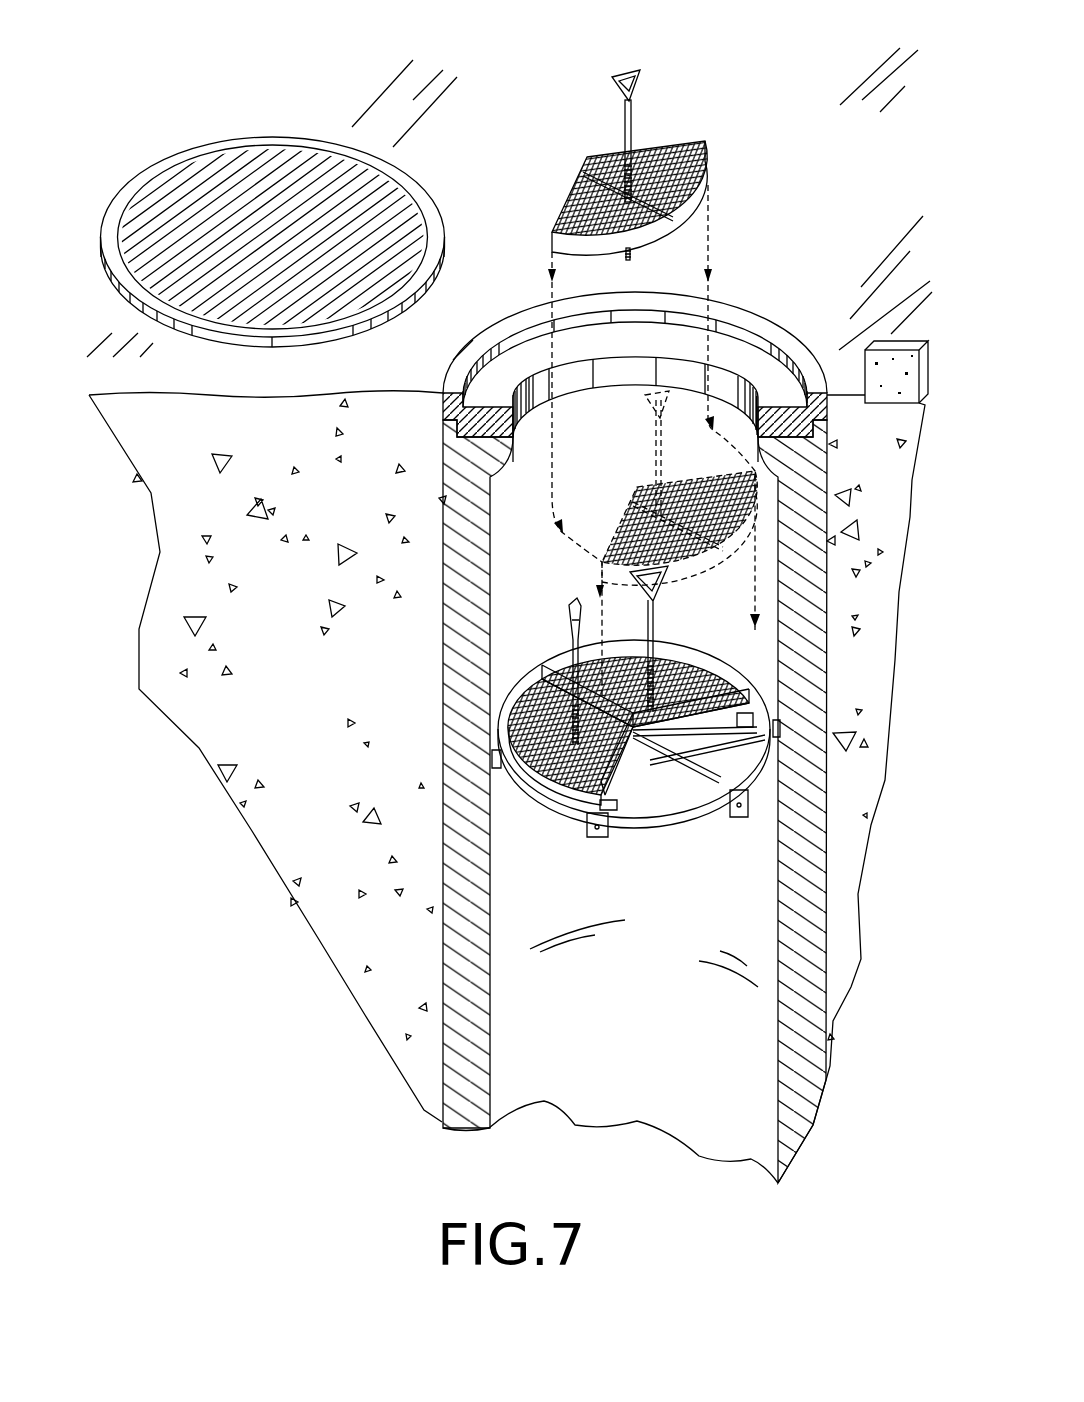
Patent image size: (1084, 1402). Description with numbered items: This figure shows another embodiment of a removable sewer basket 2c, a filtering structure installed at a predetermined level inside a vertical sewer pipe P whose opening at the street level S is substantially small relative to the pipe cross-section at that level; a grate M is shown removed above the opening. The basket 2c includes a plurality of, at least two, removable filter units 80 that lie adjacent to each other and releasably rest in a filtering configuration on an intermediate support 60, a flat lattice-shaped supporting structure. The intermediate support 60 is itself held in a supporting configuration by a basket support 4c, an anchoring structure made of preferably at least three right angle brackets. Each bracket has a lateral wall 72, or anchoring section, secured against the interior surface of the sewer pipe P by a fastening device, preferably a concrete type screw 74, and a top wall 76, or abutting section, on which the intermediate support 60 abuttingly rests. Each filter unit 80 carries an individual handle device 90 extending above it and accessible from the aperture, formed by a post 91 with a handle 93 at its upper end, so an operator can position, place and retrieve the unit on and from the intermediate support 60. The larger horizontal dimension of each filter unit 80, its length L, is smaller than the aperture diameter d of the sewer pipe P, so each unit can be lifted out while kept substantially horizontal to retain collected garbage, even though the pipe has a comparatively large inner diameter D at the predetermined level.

The manhole grate cover M is at (237, 135).
The street level S is at (831, 274).
The vertical sewer pipe P is at (816, 980).
The removable sewer basket 2c is at (709, 468).
The basket support 4c is at (755, 812).
The intermediate support 60 is at (690, 821).
The lateral wall 72 is at (604, 816).
The concrete type screw 74 is at (595, 828).
The top wall 76 is at (644, 814).
The filter unit 80 is at (643, 414).
The handle device 90 is at (628, 269).
The post 91 is at (633, 120).
The handle 93 is at (637, 68).
The length L is at (706, 141).
The diameter d is at (758, 453).
The pipe inner diameter D is at (778, 1030).